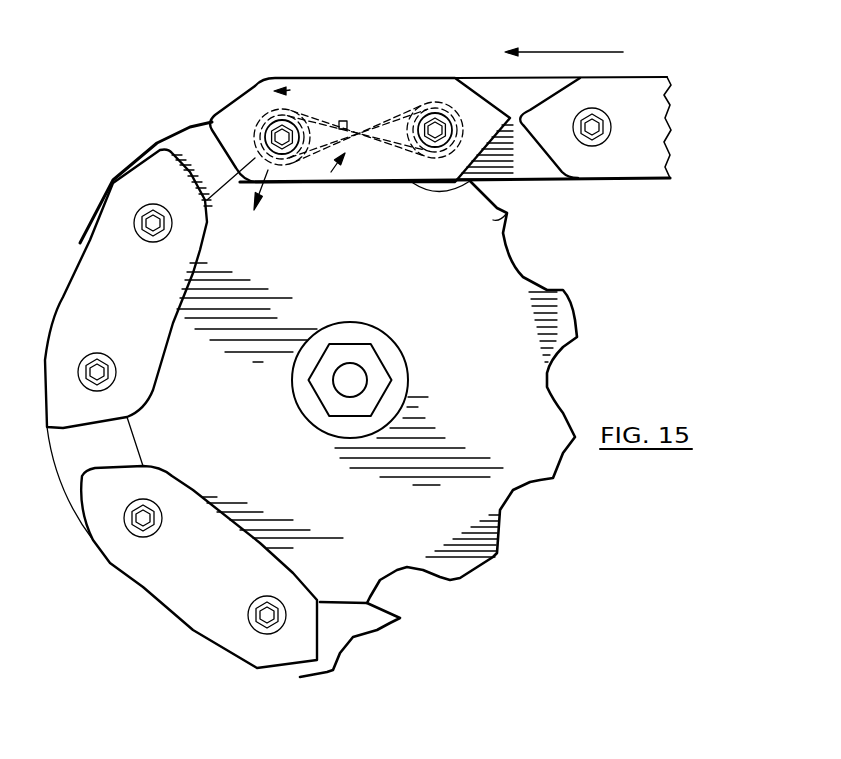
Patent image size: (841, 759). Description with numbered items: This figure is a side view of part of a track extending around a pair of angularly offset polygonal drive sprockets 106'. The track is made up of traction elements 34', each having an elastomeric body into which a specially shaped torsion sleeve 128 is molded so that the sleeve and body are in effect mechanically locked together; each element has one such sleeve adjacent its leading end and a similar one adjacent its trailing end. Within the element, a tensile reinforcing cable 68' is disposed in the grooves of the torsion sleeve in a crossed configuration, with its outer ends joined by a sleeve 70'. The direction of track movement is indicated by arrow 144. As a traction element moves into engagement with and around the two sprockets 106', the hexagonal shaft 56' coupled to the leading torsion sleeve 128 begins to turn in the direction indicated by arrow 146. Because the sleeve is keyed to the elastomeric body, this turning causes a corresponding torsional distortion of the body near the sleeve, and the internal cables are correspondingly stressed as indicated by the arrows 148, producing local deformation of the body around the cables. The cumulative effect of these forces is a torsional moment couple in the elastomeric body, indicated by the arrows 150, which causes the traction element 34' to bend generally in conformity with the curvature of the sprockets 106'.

The traction element 34' is at (358, 372).
The hexagonal shaft 56' is at (358, 354).
The sprocket 106' is at (377, 429).
The torsion sleeve 128 is at (456, 90).
The arrow indicating shaft turning direction 146 is at (257, 122).
The arrows indicating cable stress 148 is at (290, 90).
The arrows indicating torsional moment couple 150 is at (260, 196).
The arrow indicating direction of track movement 144 is at (553, 52).
The sleeve 70' is at (358, 105).
The tensile reinforcing cable 68' is at (358, 105).